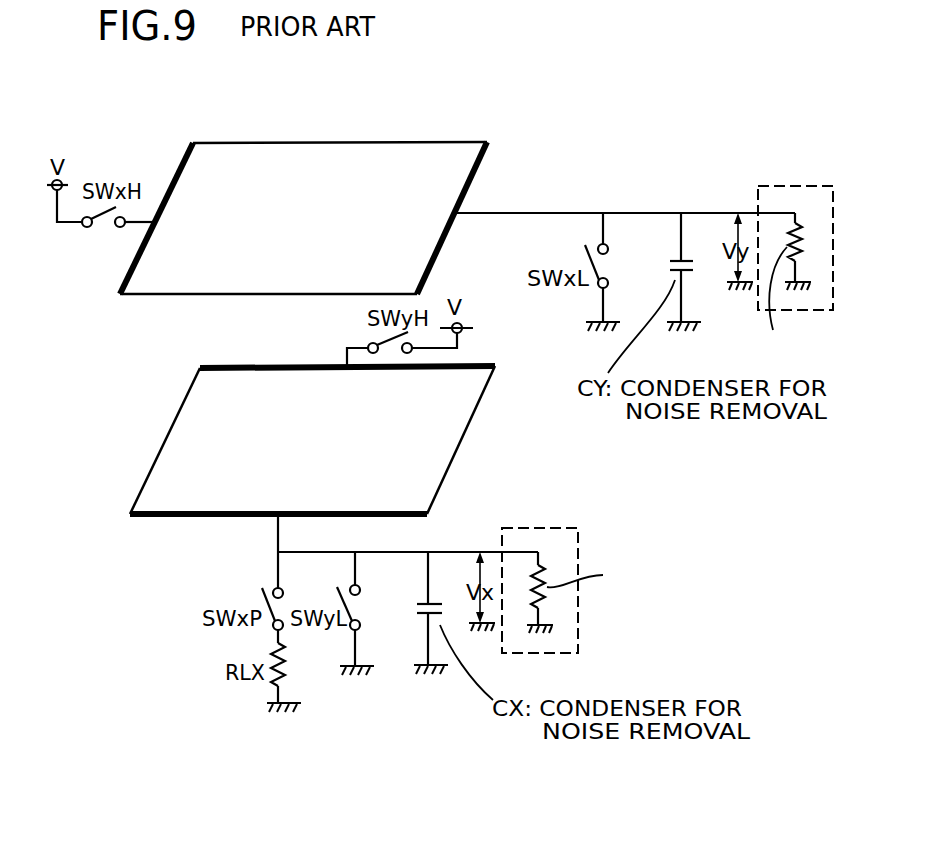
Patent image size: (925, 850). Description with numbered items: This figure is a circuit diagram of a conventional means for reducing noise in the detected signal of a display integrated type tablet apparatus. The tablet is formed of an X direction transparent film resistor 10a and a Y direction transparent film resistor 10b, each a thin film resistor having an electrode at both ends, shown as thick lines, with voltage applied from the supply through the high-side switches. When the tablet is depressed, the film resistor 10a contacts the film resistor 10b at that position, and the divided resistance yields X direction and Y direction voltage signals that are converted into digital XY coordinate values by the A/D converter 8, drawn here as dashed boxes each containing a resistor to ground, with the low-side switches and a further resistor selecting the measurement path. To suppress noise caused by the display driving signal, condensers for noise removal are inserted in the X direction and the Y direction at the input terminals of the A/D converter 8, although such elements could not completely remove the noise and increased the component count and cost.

The X direction transparent film resistor 10a is at (478, 121).
The Y direction transparent film resistor 10b is at (152, 465).
The A/D converter 8 is at (683, 134).